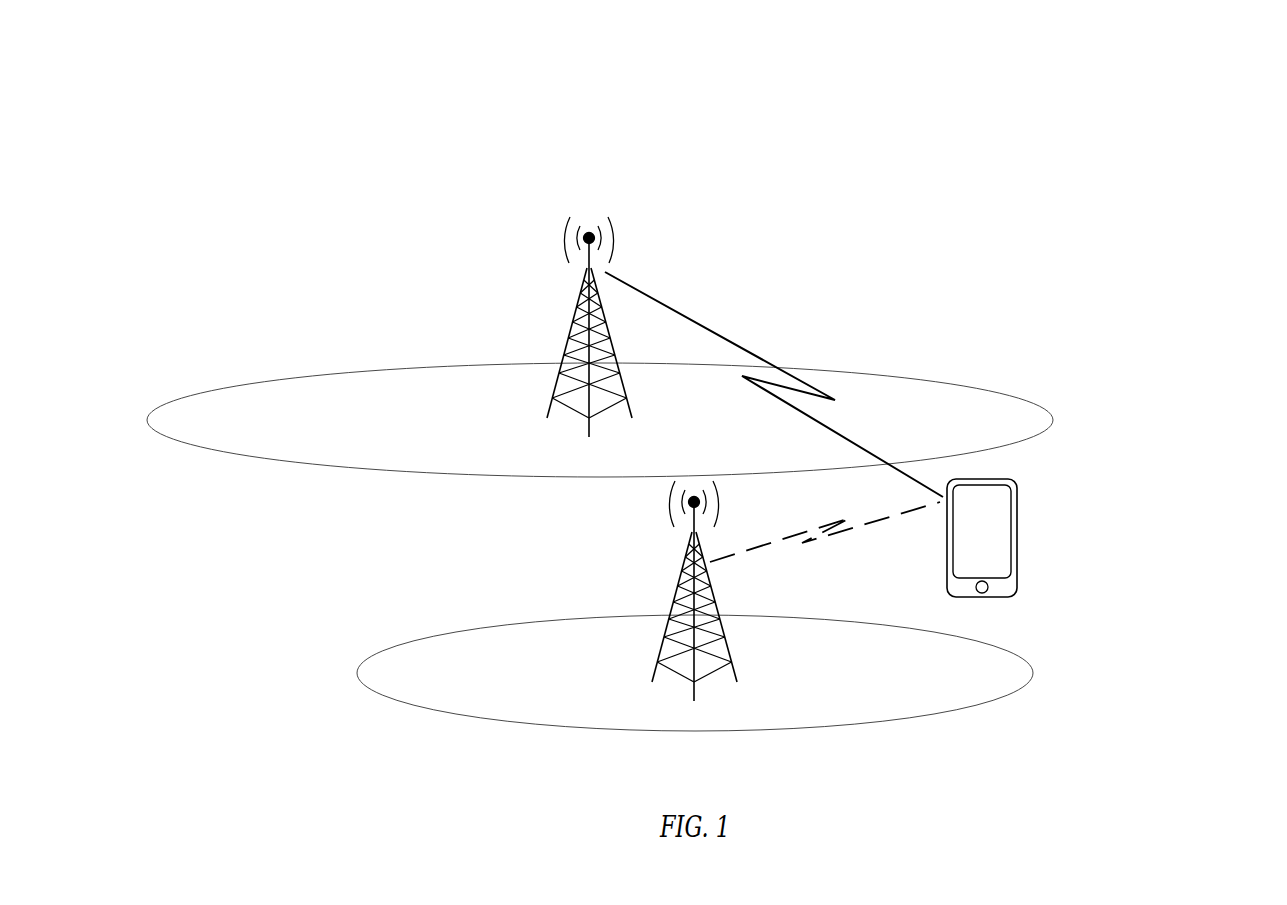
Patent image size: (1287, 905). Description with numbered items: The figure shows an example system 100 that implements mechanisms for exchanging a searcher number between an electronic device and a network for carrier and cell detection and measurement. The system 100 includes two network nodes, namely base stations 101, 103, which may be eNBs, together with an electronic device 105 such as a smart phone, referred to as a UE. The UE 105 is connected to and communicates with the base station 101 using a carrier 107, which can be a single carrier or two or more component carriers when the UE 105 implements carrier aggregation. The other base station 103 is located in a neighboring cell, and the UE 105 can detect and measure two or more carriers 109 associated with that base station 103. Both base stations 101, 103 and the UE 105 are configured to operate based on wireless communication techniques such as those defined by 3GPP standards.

The system 100 is at (1253, 52).
The network node 101 is at (578, 337).
The network node 103 is at (670, 592).
The electronic device 105 is at (1018, 492).
The carrier 107 is at (774, 384).
The carriers 109 is at (825, 539).